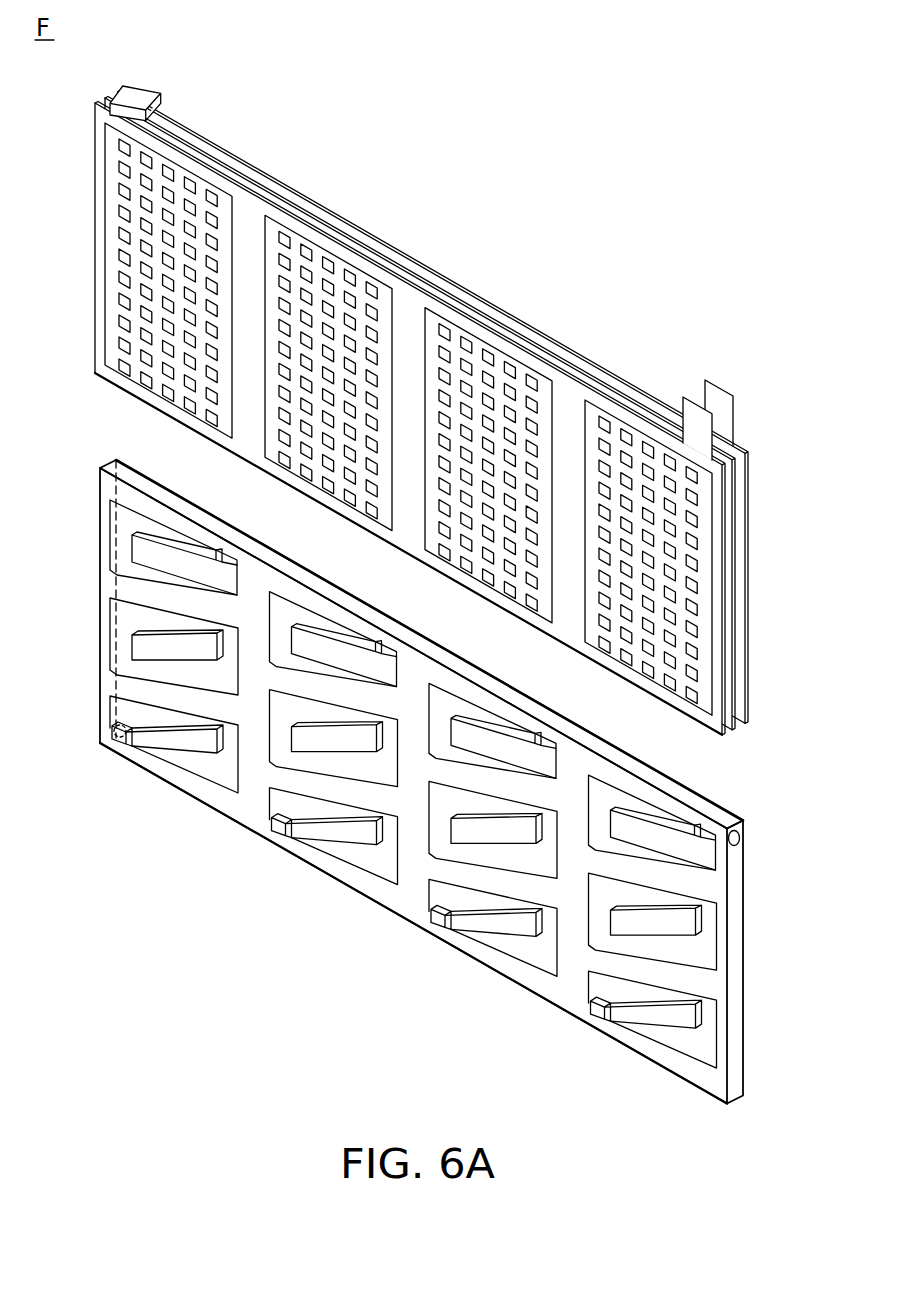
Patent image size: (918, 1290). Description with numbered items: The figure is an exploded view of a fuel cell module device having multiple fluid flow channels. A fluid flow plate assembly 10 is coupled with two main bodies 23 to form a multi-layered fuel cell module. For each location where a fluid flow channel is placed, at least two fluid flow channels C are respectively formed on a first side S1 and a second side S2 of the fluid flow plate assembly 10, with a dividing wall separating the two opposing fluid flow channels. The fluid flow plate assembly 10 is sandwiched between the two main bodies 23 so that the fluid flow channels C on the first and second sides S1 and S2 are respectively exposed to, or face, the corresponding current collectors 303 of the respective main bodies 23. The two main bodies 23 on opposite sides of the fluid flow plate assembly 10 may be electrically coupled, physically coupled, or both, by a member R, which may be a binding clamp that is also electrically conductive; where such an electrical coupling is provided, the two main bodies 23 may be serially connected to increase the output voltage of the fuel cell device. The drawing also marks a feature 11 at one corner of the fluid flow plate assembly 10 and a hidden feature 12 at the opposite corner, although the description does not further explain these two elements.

The member R is at (134, 94).
The current collector 303 is at (262, 221).
The main body 23 is at (725, 505).
The fluid flow plate assembly 10 is at (428, 805).
The hole at frame corner 11 is at (736, 824).
The hidden hole at frame corner 12 is at (113, 748).
The fluid flow channel C is at (284, 823).
The first side S1 is at (688, 1066).
The second side S2 is at (748, 1062).